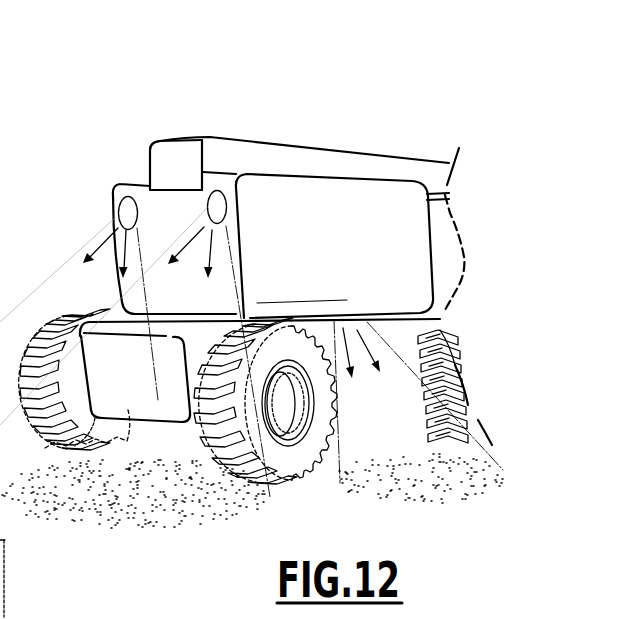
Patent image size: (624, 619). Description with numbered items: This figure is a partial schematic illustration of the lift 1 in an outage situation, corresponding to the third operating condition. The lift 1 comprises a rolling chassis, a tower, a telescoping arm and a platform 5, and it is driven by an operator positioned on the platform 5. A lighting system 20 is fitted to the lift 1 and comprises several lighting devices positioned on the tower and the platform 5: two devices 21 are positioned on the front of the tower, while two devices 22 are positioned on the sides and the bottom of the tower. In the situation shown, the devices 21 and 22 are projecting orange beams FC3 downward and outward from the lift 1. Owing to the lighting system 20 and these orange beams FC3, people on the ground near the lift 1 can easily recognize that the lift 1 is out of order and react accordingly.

The lift 1 is at (297, 96).
The platform 5 is at (5, 582).
The lighting system 20 is at (125, 146).
The lighting devices 21 is at (128, 208).
The lighting devices 22 is at (346, 307).
The light beams FC3 is at (415, 388).